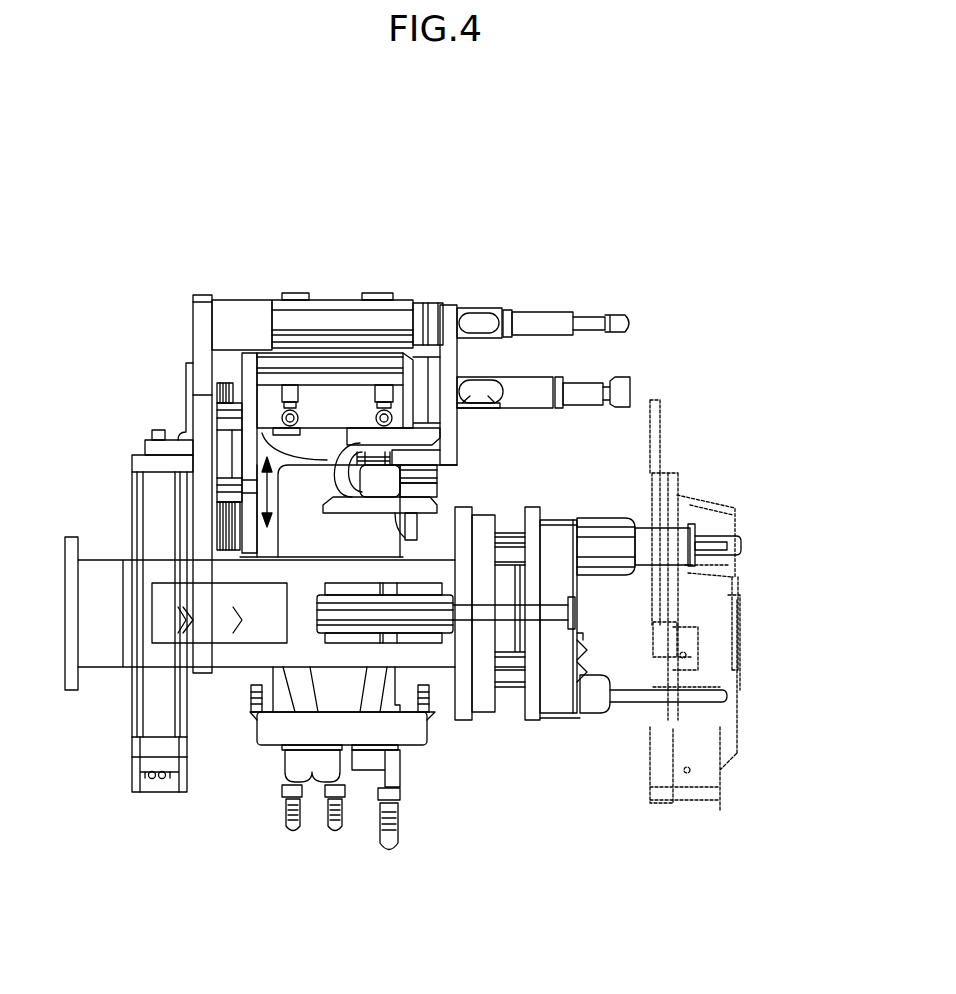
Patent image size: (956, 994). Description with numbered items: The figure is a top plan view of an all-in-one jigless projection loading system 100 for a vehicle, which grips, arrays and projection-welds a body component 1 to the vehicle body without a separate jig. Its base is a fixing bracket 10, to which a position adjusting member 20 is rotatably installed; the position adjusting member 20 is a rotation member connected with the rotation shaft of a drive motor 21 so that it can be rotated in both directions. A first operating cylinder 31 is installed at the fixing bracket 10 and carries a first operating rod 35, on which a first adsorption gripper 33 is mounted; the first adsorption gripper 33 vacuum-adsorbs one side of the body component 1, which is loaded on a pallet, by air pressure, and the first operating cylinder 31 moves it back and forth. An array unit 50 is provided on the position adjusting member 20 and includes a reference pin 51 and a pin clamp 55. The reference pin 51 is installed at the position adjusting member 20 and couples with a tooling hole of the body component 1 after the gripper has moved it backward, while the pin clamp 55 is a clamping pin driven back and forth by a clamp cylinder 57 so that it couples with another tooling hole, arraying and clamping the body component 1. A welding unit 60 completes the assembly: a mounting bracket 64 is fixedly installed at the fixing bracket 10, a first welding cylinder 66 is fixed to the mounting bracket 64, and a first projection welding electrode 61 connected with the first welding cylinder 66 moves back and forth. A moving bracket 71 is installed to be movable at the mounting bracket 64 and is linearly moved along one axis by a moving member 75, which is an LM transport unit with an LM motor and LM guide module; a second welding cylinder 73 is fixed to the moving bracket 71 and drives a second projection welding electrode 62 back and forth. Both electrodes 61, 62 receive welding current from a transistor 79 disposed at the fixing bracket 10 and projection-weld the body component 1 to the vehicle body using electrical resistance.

The all-in-one jigless projection loading system 100 is at (456, 178).
The body component 1 is at (740, 615).
The fixing bracket 10 is at (100, 645).
The position adjusting member 20 is at (532, 730).
The drive motor 21 is at (505, 580).
The first operating cylinder 31 is at (430, 627).
The first adsorption gripper 33 is at (563, 640).
The first operating rod 35 is at (507, 613).
The array unit 50 is at (624, 498).
The reference pin 51 is at (690, 695).
The pin clamp 55 is at (741, 547).
The clamp cylinder 57 is at (595, 520).
The welding unit 60 is at (460, 298).
The first projection welding electrode 61 is at (558, 320).
The second projection welding electrode 62 is at (580, 380).
The mounting bracket 64 is at (205, 298).
The first welding cylinder 66 is at (352, 310).
The moving bracket 71 is at (248, 365).
The second welding cylinder 73 is at (327, 385).
The moving member 75 is at (228, 370).
The transistor 79 is at (300, 535).